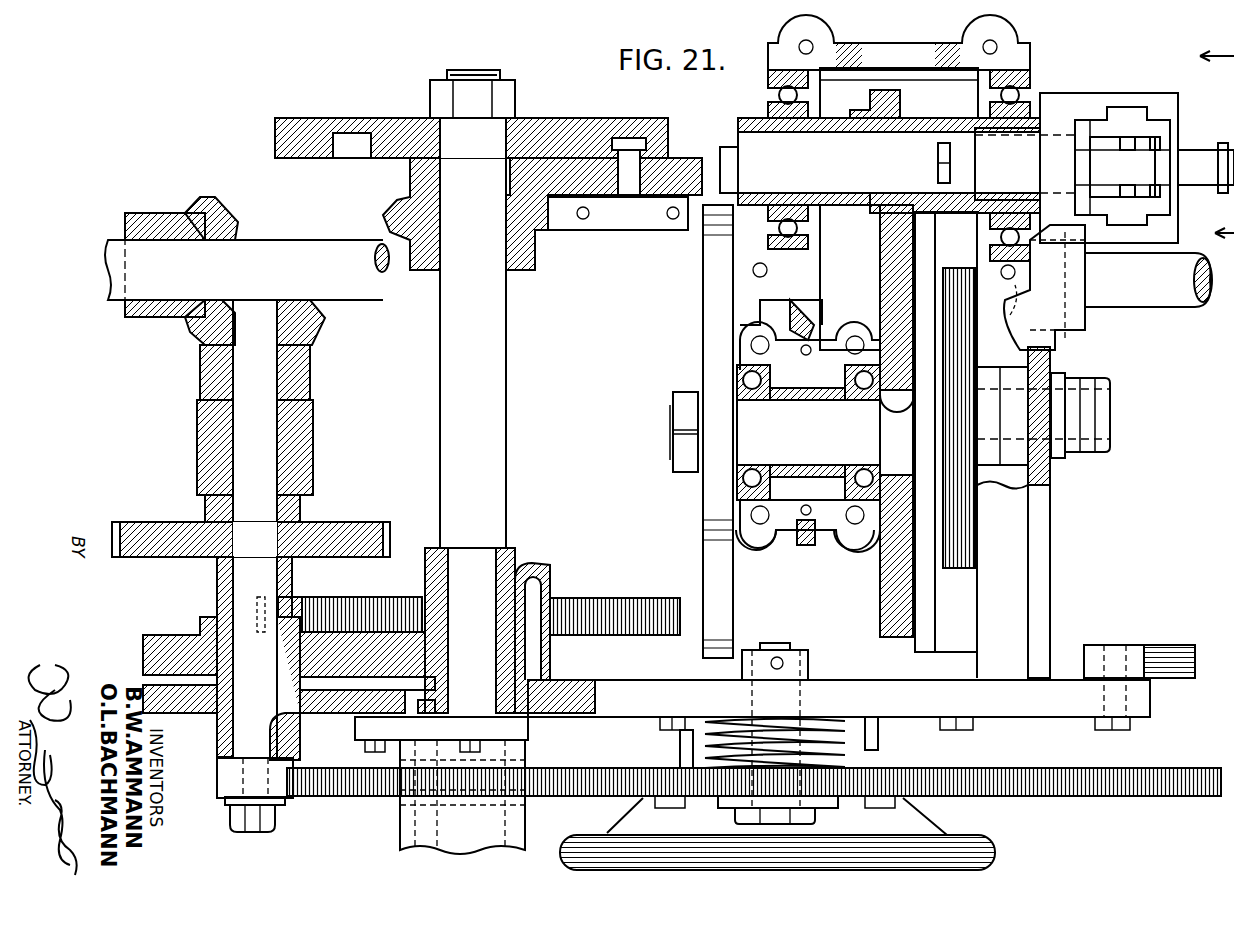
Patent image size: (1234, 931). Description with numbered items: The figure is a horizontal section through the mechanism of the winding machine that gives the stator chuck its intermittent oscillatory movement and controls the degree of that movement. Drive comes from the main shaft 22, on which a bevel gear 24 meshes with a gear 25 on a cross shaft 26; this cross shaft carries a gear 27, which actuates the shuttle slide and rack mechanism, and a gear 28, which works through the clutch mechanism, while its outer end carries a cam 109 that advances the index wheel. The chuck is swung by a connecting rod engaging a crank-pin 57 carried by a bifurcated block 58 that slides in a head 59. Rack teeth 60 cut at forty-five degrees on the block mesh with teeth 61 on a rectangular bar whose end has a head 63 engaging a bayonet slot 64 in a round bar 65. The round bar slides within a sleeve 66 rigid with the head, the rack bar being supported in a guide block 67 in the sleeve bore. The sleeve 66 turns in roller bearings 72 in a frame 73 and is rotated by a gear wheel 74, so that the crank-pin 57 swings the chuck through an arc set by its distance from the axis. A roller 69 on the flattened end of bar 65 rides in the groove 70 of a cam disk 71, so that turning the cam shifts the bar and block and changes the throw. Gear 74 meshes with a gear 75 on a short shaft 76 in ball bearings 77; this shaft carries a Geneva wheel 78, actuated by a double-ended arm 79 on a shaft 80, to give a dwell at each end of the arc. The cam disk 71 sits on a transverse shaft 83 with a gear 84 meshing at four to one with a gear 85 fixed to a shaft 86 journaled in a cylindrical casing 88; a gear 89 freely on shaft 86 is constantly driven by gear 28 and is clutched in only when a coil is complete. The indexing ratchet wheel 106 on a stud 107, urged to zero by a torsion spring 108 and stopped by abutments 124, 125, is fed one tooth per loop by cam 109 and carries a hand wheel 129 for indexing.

The main shaft 22 is at (298, 258).
The bevel gear 24 is at (150, 318).
The gear 25 is at (310, 378).
The cross shaft 26 is at (245, 572).
The gear 27 is at (165, 530).
The gear 28 is at (175, 645).
The crank-pin 57 is at (1206, 168).
The bifurcated block 58 is at (1163, 120).
The head 59 is at (1123, 105).
The rack teeth 60 is at (1128, 140).
The teeth 61 is at (1142, 190).
The head 63 is at (938, 155).
The bayonet slot 64 is at (938, 172).
The round bar 65 is at (847, 162).
The sleeve 66 is at (852, 125).
The guide block 67 is at (1025, 164).
The roller 69 is at (618, 140).
The groove 70 is at (352, 145).
The cam disk 71 is at (370, 118).
The roller bearings 72 is at (870, 78).
The frame 73 is at (899, 42).
The gear wheel 74 is at (902, 112).
The gear 75 is at (882, 285).
The short shaft 76 is at (825, 432).
The ball bearings 77 is at (757, 400).
The Geneva wheel 78 is at (710, 388).
The double-ended arm 79 is at (680, 458).
The shaft 80 is at (676, 435).
The transverse shaft 83 is at (487, 388).
The gear 84 is at (600, 598).
The gear 85 is at (450, 603).
The shaft 86 is at (458, 548).
The cylindrical casing 88 is at (400, 805).
The gear 89 is at (440, 650).
The indexing ratchet wheel 106 is at (1000, 768).
The stud 107 is at (790, 695).
The torsion spring 108 is at (730, 722).
The cam 109 is at (237, 778).
The abutment 124 is at (878, 737).
The abutment 125 is at (680, 740).
The hand wheel 129 is at (995, 845).